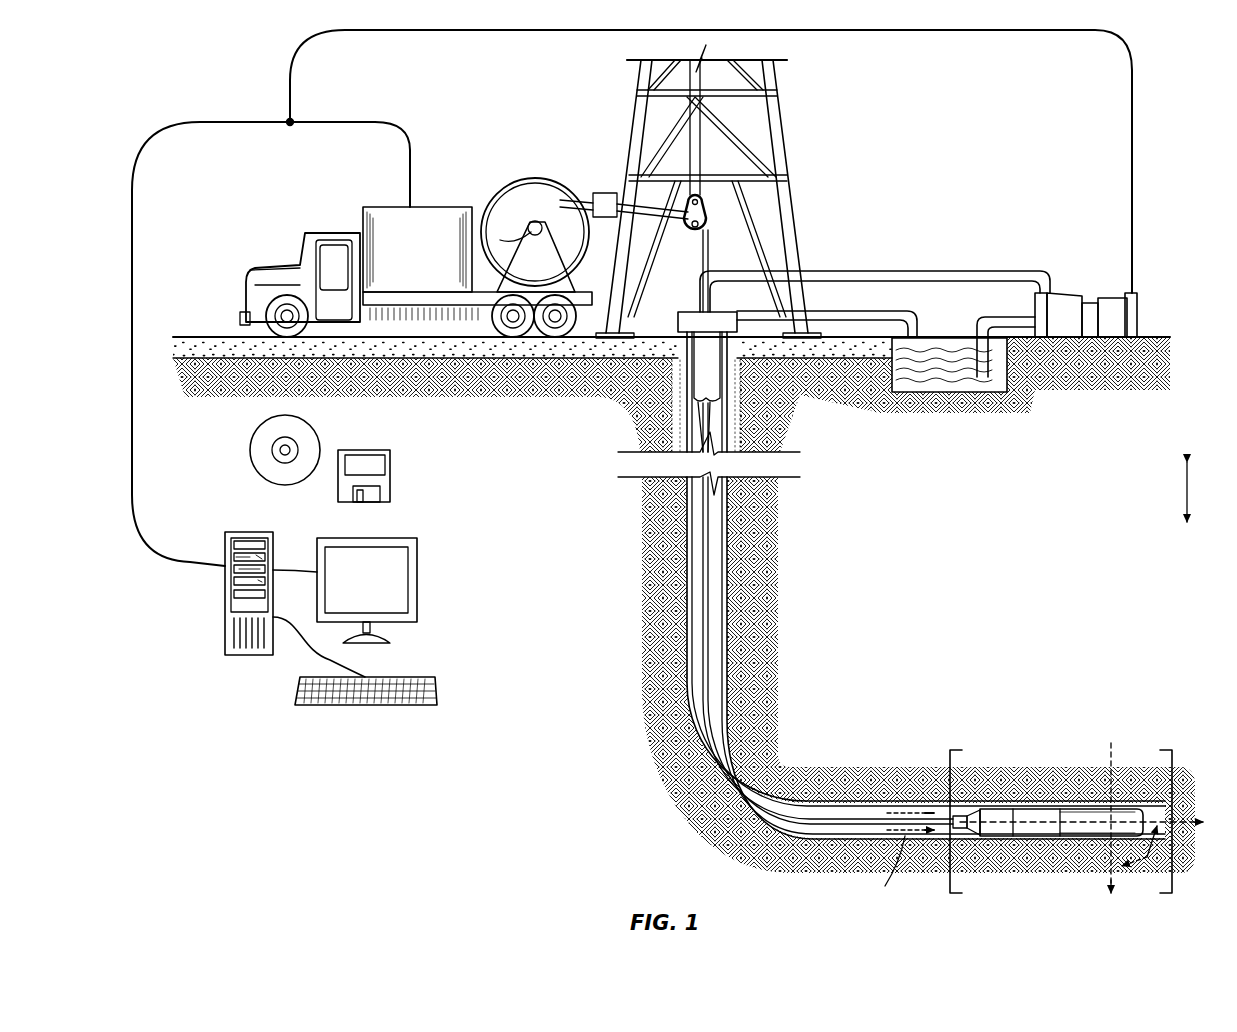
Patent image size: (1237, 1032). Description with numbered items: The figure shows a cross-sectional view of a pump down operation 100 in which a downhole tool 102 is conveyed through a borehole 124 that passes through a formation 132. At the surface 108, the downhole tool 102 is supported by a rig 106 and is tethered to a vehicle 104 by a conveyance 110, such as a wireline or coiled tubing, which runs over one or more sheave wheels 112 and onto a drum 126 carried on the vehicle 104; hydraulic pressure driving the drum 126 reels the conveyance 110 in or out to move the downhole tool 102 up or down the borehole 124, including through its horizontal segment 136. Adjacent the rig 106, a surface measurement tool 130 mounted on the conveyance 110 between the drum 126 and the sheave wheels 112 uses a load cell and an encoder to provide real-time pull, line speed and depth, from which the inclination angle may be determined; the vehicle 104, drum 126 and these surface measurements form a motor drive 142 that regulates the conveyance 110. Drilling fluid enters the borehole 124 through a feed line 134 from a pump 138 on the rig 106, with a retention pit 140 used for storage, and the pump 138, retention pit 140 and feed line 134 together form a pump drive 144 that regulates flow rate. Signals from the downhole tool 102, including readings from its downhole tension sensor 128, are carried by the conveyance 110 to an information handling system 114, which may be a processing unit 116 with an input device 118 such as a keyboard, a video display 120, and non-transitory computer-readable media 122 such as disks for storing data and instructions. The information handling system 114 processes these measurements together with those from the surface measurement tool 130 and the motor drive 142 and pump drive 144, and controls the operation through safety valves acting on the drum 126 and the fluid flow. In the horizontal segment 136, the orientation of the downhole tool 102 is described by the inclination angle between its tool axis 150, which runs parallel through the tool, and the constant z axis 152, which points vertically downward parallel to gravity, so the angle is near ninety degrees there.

The pump down operation 100 is at (249, 56).
The downhole tool 102 is at (1043, 791).
The vehicle 104 is at (395, 207).
The rig 106 is at (791, 192).
The surface 108 is at (482, 356).
The conveyance 110 is at (703, 557).
The sheave wheels 112 is at (690, 242).
The information handling system 114 is at (251, 726).
The processing unit 116 is at (250, 532).
The input device 118 is at (437, 691).
The video display 120 is at (365, 538).
The non-transitory computer-readable media 122 is at (380, 420).
The borehole 124 is at (687, 651).
The drum 126 is at (510, 192).
The downhole tension sensor 128 is at (1020, 814).
The surface measurement tool 130 is at (605, 191).
The formation 132 is at (882, 550).
The feed line 134 is at (868, 310).
The horizontal segment 136 is at (703, 393).
The pump 138 is at (1066, 292).
The retention pit 140 is at (943, 376).
The motor drive 142 is at (470, 131).
The pump drive 144 is at (1041, 201).
The tool axis 150 is at (1125, 820).
The z axis 152 is at (1105, 850).